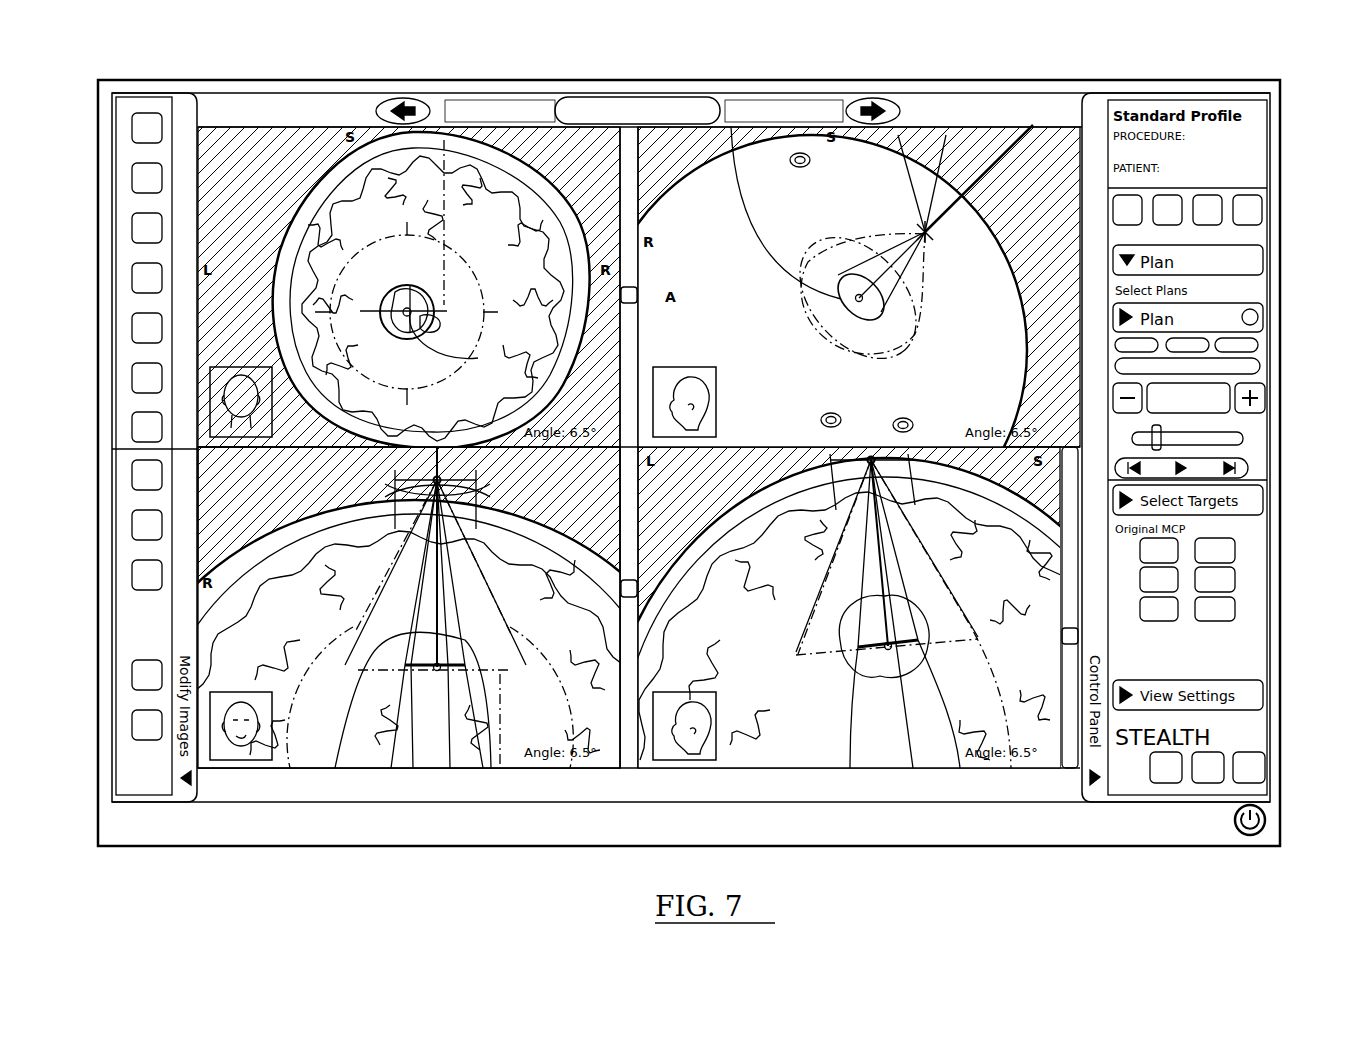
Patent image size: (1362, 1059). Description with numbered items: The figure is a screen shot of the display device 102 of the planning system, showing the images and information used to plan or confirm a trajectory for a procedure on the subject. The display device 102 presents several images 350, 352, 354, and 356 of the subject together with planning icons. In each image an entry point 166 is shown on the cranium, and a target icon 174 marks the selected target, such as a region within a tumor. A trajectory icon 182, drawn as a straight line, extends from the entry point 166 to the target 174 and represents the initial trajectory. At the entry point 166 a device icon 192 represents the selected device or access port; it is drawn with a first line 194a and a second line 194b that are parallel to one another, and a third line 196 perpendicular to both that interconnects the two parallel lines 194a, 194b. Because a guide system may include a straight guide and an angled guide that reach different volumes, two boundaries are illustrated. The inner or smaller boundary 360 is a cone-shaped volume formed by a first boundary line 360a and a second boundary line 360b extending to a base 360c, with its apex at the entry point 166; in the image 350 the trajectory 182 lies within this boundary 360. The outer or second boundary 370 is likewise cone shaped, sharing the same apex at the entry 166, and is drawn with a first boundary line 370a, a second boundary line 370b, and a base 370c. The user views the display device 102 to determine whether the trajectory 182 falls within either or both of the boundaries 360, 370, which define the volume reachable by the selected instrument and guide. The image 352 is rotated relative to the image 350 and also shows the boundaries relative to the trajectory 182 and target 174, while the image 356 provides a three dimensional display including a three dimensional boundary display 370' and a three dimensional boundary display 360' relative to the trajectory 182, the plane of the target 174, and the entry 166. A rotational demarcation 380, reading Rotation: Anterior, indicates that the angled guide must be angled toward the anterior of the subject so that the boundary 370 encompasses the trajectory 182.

The display device 102 is at (563, 58).
The entry point 166 is at (946, 135).
The target icon 174 is at (915, 818).
The trajectory icon 182 is at (898, 135).
The device icon 192 is at (388, 468).
The first line 194a is at (385, 492).
The second line 194b is at (490, 490).
The third line 196 is at (463, 472).
The image 350 is at (237, 770).
The image 352 is at (1048, 771).
The image 354 is at (290, 127).
The image 356 is at (1010, 128).
The boundary 360 is at (657, 469).
The three dimensional boundary display 360' is at (867, 306).
The first boundary line 360a is at (335, 768).
The second boundary line 360b is at (483, 768).
The base 360c is at (391, 768).
The second boundary 370 is at (739, 465).
The three dimensional boundary display 370' is at (903, 294).
The first boundary line 370a is at (290, 768).
The second boundary line 370b is at (570, 768).
The base 370c is at (500, 768).
The rotational demarcation 380 is at (1243, 656).